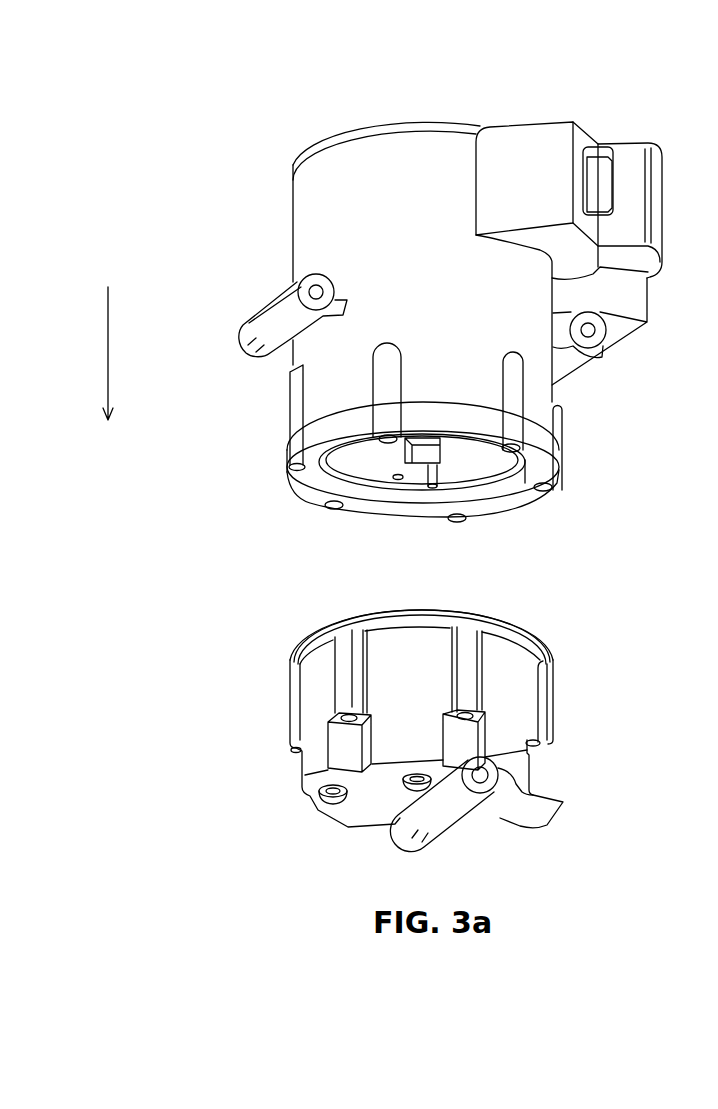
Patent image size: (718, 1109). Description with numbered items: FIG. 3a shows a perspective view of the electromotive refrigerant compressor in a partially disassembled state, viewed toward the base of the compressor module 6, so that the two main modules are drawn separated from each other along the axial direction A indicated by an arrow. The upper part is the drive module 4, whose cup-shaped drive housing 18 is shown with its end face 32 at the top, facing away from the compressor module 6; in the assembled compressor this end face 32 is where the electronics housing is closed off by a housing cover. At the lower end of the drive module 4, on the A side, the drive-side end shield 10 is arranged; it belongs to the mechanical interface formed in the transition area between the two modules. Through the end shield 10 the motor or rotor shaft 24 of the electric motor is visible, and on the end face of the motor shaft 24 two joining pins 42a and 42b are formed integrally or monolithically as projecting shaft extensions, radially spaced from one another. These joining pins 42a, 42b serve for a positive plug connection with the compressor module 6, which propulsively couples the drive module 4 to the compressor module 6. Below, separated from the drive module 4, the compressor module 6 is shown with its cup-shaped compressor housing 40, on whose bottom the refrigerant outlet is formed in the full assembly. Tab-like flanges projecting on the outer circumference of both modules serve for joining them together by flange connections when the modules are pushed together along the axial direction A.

The end face 32 is at (444, 102).
The drive module 4 is at (397, 306).
The drive housing 18 is at (350, 240).
The end shield 10 is at (363, 500).
The motor shaft 24 is at (437, 449).
The joining pin 42a is at (436, 481).
The joining pin 42b is at (393, 477).
The compressor module 6 is at (345, 731).
The compressor housing 40 is at (397, 693).
The axial direction A is at (108, 345).